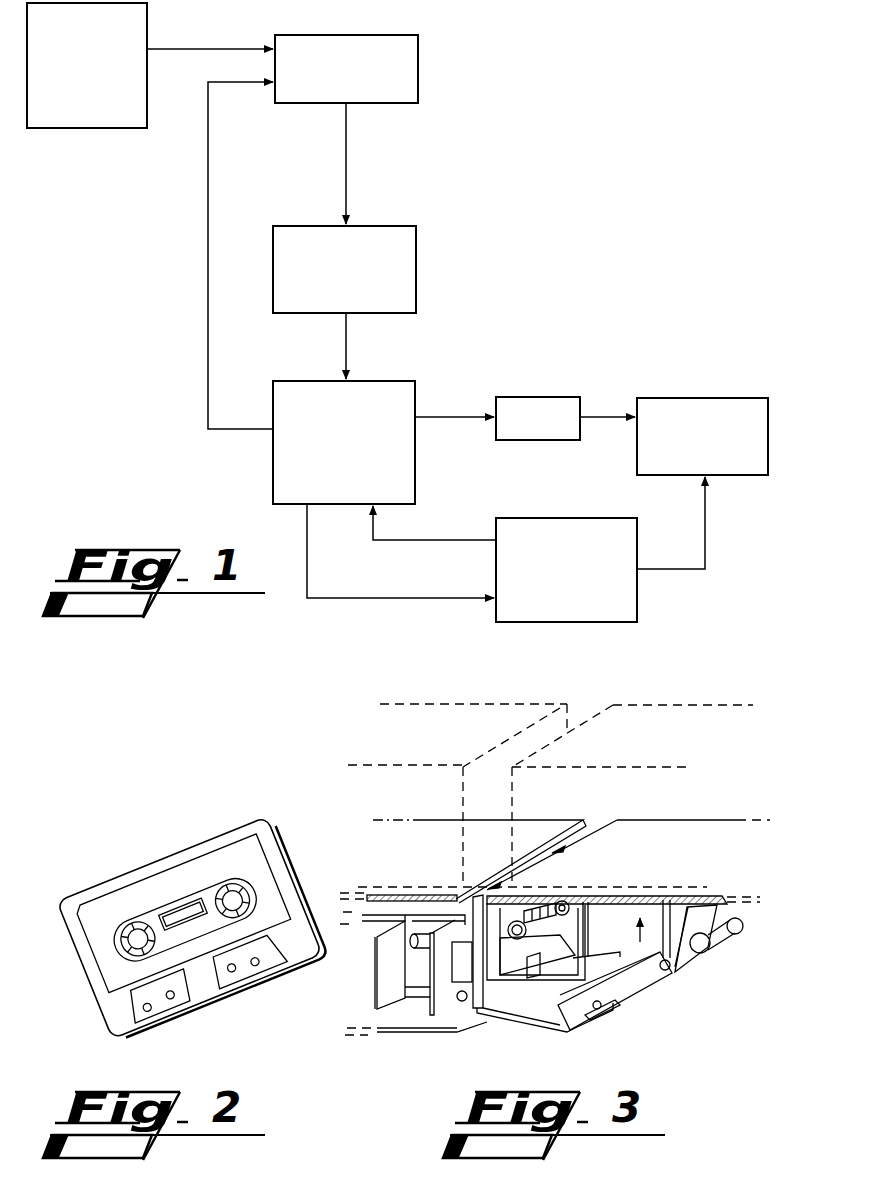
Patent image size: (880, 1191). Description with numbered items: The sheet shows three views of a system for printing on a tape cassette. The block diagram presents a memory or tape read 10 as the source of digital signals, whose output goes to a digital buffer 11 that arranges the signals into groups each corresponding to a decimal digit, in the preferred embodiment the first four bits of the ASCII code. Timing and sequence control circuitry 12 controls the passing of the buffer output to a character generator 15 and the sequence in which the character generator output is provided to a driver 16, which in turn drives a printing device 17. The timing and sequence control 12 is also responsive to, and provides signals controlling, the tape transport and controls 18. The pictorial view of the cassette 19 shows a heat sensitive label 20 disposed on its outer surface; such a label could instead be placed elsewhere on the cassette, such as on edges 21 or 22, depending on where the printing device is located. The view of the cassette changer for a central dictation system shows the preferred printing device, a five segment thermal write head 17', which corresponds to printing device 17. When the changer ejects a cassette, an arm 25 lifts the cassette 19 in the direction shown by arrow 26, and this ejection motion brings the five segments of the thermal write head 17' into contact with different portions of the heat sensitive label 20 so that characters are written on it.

In FIG. 1, the memory or tape read 10 is at (60, 129).
In FIG. 1, the digital buffer 11 is at (418, 81).
In FIG. 1, the character generator 15 is at (416, 251).
In FIG. 1, the timing and sequence control circuitry 12 is at (398, 381).
In FIG. 1, the driver 16 is at (538, 397).
In FIG. 1, the printing device 17 is at (702, 409).
In FIG. 1, the tape transport and controls 18 is at (557, 518).
In FIG. 2, the cassette 19 is at (165, 877).
In FIG. 3, the cassette 19 is at (577, 907).
In FIG. 2, the heat sensitive label 20 is at (202, 987).
In FIG. 3, the heat sensitive label 20 is at (547, 957).
In FIG. 2, the edge 21 is at (287, 847).
In FIG. 2, the edge 22 is at (220, 827).
In FIG. 3, the edge 22 is at (530, 870).
In FIG. 3, the five segment thermal write head 17' is at (520, 1004).
In FIG. 3, the arm 25 is at (545, 1020).
In FIG. 3, the arrow 26 is at (650, 928).